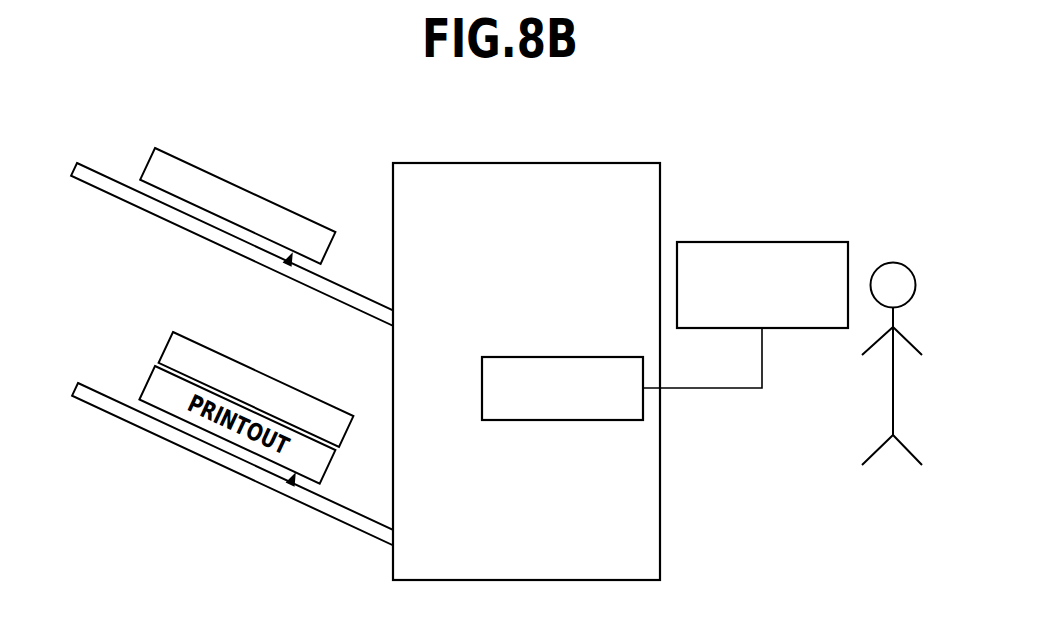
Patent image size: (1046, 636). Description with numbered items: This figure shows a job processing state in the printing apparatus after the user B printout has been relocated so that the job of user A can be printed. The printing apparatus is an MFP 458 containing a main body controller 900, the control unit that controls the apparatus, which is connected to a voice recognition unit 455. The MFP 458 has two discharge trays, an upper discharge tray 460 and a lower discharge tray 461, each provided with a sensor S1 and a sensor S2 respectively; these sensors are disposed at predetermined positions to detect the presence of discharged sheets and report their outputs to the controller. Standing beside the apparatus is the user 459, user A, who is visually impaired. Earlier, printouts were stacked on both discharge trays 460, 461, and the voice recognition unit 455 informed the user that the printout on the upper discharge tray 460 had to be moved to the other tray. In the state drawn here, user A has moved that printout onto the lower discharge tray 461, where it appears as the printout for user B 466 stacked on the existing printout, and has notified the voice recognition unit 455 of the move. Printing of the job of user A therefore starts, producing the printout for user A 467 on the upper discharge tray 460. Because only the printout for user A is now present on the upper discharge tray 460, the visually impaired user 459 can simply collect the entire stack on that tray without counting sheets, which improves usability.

The MFP 458 is at (525, 163).
The main body controller 900 is at (565, 357).
The voice recognition unit 455 is at (720, 242).
The user 459 is at (893, 270).
The upper discharge tray 460 is at (337, 303).
The lower discharge tray 461 is at (337, 521).
The printout for user A 467 is at (244, 186).
The printout for user B 466 is at (167, 343).
The sensor S1 is at (287, 264).
The sensor S2 is at (290, 484).